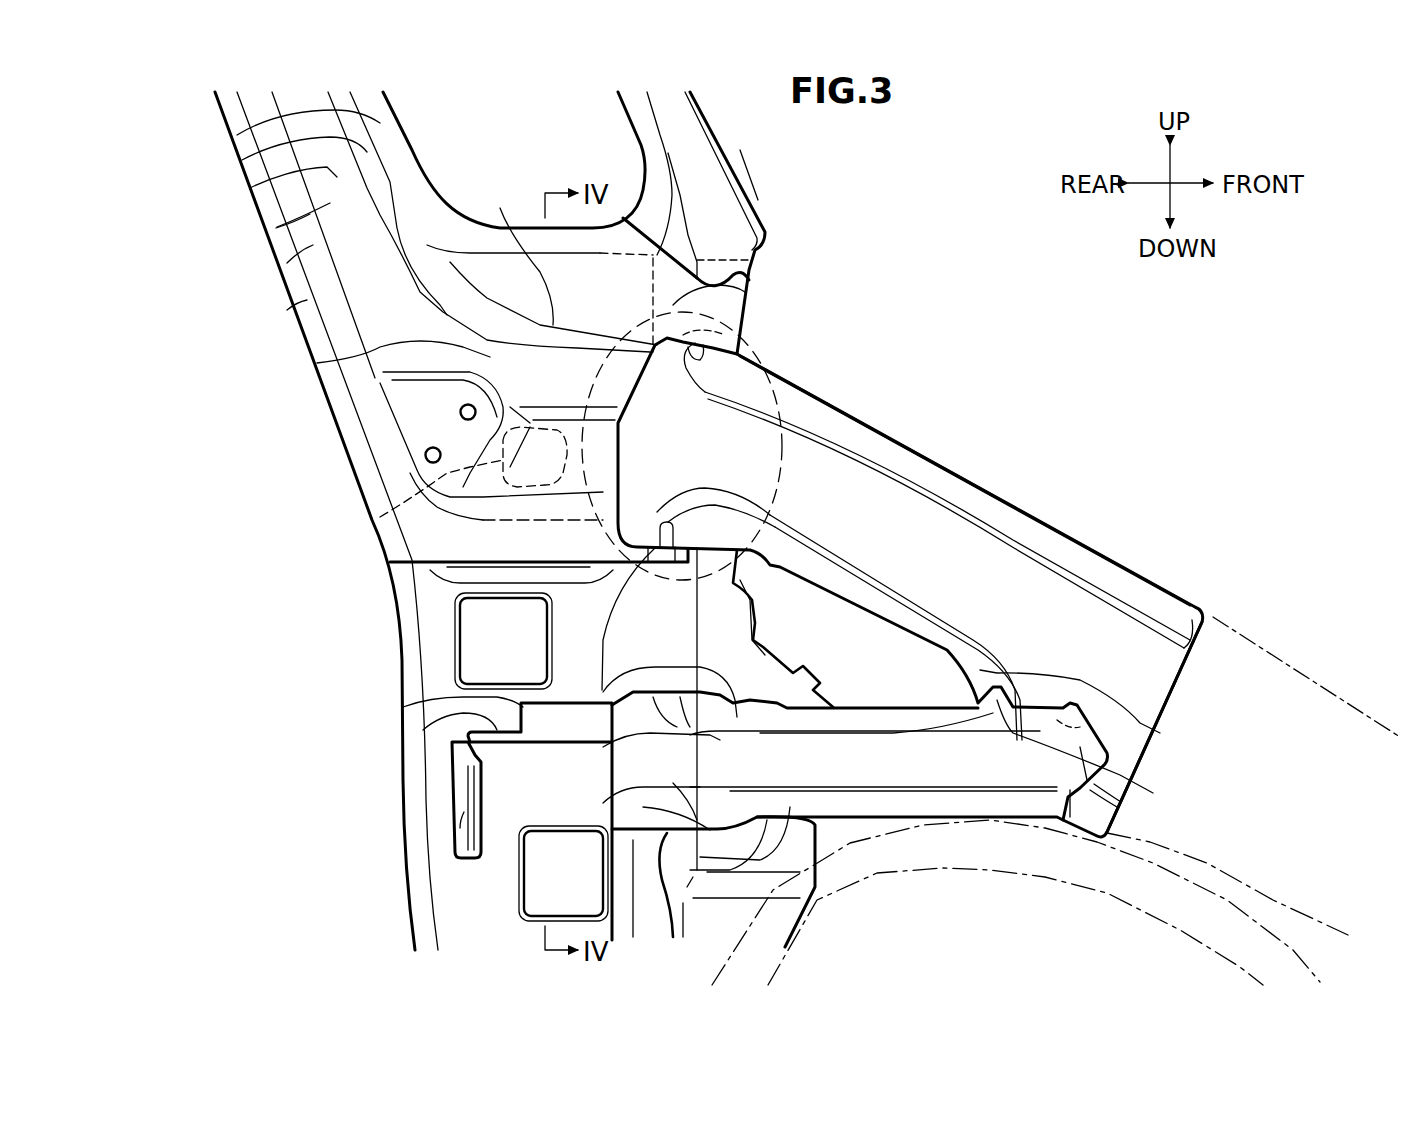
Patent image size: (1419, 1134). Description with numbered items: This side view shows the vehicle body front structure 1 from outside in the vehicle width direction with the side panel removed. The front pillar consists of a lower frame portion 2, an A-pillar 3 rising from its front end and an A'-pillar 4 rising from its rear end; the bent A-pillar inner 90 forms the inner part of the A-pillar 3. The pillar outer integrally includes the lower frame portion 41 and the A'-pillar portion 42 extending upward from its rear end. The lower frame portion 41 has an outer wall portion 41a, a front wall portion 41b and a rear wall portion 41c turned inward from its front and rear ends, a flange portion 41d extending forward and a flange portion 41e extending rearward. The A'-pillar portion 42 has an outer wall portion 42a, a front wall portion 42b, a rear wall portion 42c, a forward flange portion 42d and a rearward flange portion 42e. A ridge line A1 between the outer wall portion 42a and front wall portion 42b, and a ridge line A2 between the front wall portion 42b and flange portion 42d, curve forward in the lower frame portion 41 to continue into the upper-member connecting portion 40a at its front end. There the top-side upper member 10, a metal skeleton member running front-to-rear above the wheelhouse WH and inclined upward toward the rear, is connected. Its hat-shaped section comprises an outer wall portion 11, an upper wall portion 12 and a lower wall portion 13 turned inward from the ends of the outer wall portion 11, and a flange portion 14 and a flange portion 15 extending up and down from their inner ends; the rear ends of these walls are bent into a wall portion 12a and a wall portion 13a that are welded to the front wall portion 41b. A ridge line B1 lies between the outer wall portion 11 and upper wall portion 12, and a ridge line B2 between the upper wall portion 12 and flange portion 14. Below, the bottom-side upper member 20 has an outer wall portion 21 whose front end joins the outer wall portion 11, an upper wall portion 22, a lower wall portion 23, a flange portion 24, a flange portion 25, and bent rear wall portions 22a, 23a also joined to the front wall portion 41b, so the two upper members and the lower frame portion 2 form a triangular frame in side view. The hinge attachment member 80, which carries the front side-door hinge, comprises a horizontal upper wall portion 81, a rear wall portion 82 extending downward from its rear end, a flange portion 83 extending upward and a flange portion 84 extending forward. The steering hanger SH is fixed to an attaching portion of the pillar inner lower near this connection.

The vehicle body front structure 1 is at (912, 183).
The lower frame portion 2 is at (533, 187).
The A-pillar 3 is at (610, 111).
The A'-pillar 4 is at (420, 129).
The top-side upper member 10 is at (1250, 696).
The outer wall portion 11 is at (1170, 683).
The upper wall portion 12 is at (1197, 607).
The wall portion 12a is at (753, 345).
The lower wall portion 13 is at (1158, 733).
The wall portion 13a is at (617, 526).
The flange portion 14 is at (1173, 612).
The flange portion 15 is at (1113, 775).
The bottom-side upper member 20 is at (857, 853).
The outer wall portion 21 is at (650, 780).
The upper wall portion 22 is at (650, 743).
The wall portion 22a is at (650, 713).
The lower wall portion 23 is at (608, 840).
The wall portion 23a is at (612, 797).
The flange portion 24 is at (640, 680).
The flange portion 25 is at (650, 853).
The upper-member connecting portion 40a is at (845, 418).
The lower frame portion 41 is at (244, 401).
The outer wall portion 41a is at (317, 363).
The front wall portion 41b is at (748, 293).
The rear wall portion 41c is at (287, 265).
The flange portion 41d is at (742, 327).
The flange portion 41e is at (287, 310).
The A'-pillar portion 42 is at (158, 178).
The outer wall portion 42a is at (275, 227).
The front wall portion 42b is at (252, 192).
The rear wall portion 42c is at (262, 103).
The flange portion 42d is at (253, 158).
The flange portion 42e is at (243, 130).
The hinge attachment member 80 is at (345, 758).
The upper wall portion 81 is at (423, 730).
The rear wall portion 82 is at (453, 800).
The flange portion 83 is at (447, 705).
The flange portion 84 is at (460, 820).
The A-pillar inner 90 is at (697, 162).
The ridge line A1 is at (372, 175).
The ridge line A2 is at (516, 252).
The ridge line B1 is at (1047, 562).
The ridge line B2 is at (1000, 535).
The steering hanger SH is at (383, 512).
The wheelhouse WH is at (1030, 902).